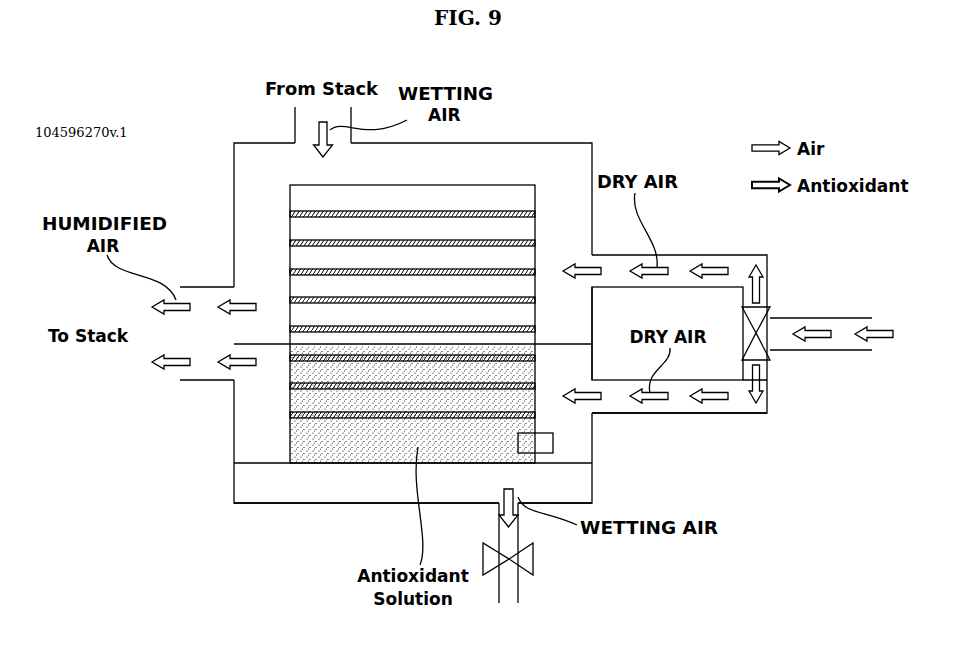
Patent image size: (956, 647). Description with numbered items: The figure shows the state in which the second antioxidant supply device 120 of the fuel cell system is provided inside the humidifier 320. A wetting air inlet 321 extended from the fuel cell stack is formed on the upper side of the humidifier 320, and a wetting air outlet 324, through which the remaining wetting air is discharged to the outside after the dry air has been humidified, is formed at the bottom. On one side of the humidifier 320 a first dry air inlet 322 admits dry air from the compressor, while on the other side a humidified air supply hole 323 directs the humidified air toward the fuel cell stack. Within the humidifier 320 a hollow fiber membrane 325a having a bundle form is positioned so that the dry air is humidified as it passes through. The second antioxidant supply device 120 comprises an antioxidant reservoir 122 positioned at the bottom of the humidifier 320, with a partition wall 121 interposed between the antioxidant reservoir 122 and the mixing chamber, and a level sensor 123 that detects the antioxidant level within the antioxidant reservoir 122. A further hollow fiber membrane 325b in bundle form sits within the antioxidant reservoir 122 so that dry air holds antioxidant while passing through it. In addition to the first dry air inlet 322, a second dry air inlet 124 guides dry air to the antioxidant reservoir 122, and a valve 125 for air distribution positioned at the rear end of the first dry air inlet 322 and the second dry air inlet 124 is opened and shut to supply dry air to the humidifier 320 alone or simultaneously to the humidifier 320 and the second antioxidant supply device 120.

The second antioxidant supply device 120 is at (310, 466).
The partition wall 121 is at (278, 345).
The antioxidant reservoir 122 is at (337, 465).
The level sensor 123 is at (543, 443).
The second dry air inlet 124 is at (737, 405).
The valve for an air distribution 125 is at (755, 320).
The humidifier 320 is at (493, 137).
The wetting air inlet 321 is at (302, 133).
The first dry air inlet 322 is at (740, 263).
The humidified air supply hole 323 is at (205, 300).
The wetting air outlet 324 is at (512, 537).
The hollow fiber membrane 325a is at (510, 210).
The hollow fiber membrane 325b is at (367, 420).